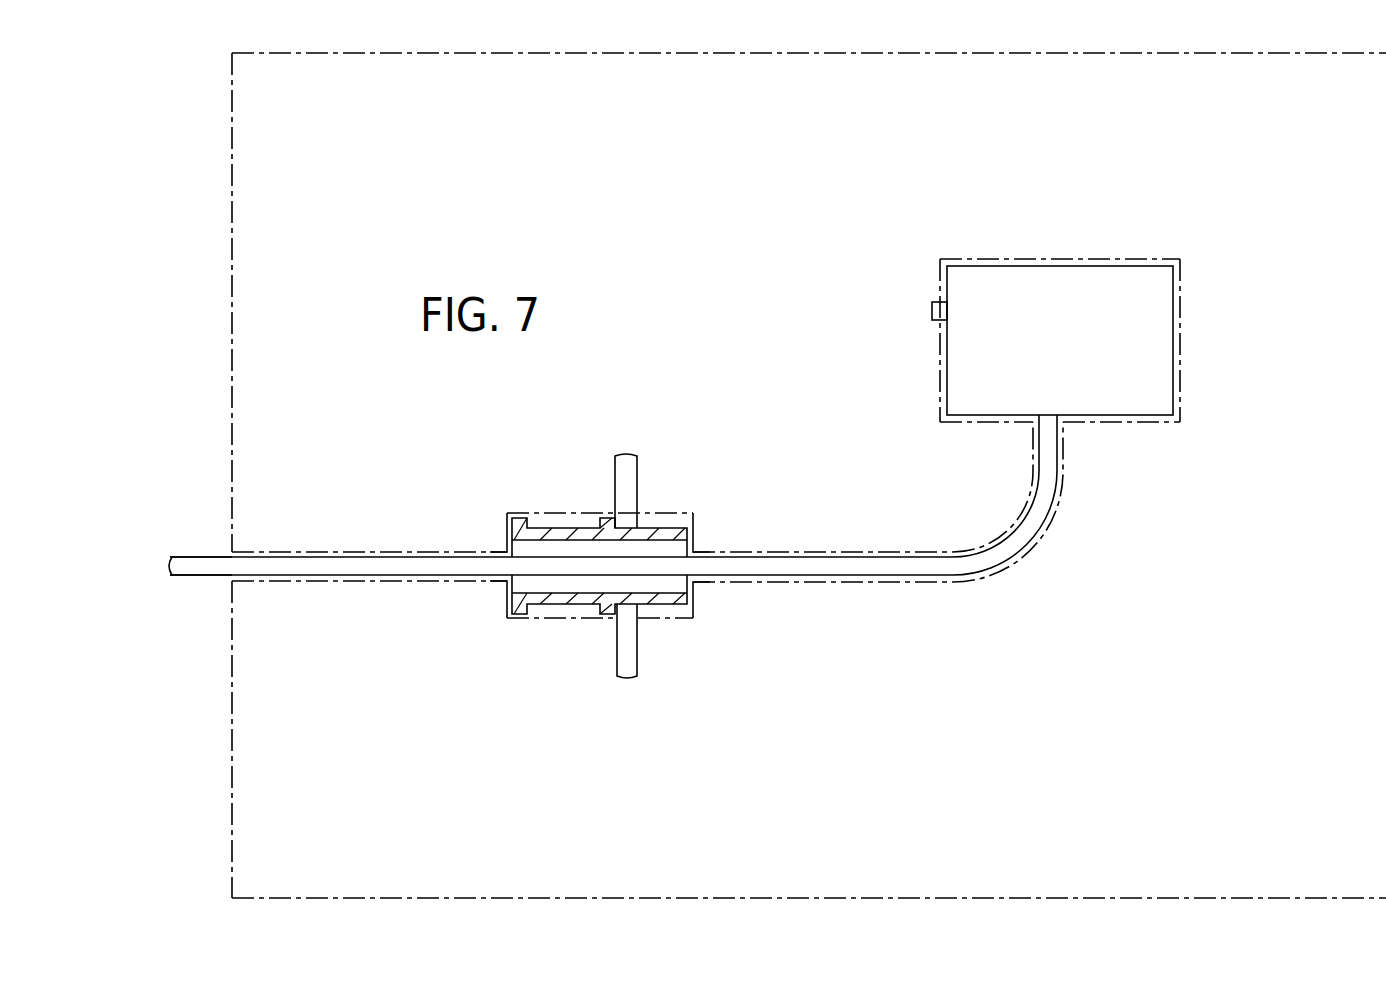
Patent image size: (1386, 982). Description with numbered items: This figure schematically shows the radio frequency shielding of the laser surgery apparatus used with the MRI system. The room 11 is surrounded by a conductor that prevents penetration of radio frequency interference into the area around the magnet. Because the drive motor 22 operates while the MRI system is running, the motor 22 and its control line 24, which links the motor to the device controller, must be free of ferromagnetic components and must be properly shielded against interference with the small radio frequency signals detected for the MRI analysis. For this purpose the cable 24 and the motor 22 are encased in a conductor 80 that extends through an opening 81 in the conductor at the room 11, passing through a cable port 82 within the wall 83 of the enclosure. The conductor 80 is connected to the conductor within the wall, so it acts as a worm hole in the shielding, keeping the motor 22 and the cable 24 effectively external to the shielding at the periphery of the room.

The room 11 is at (913, 897).
The drive motor 22 is at (1008, 280).
The control line 24 is at (755, 570).
The conductor 80 is at (915, 580).
The opening 81 is at (258, 582).
The cable port 82 is at (563, 620).
The wall 83 is at (640, 658).